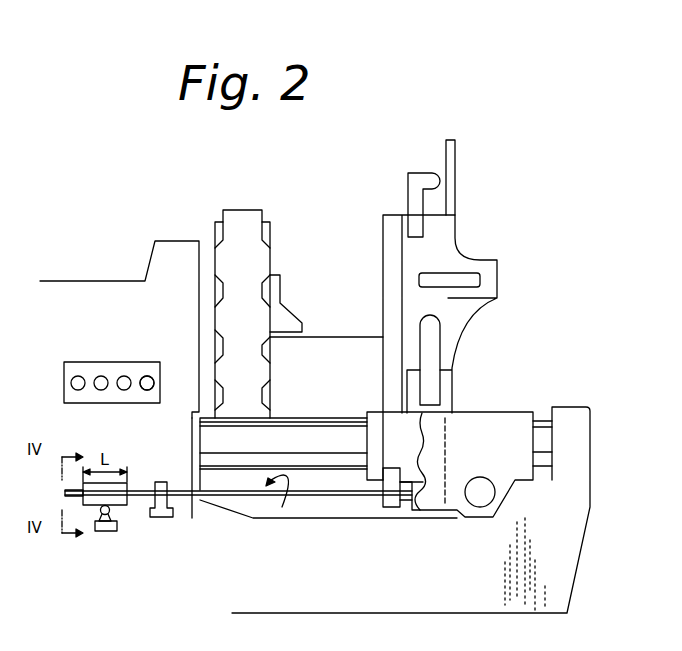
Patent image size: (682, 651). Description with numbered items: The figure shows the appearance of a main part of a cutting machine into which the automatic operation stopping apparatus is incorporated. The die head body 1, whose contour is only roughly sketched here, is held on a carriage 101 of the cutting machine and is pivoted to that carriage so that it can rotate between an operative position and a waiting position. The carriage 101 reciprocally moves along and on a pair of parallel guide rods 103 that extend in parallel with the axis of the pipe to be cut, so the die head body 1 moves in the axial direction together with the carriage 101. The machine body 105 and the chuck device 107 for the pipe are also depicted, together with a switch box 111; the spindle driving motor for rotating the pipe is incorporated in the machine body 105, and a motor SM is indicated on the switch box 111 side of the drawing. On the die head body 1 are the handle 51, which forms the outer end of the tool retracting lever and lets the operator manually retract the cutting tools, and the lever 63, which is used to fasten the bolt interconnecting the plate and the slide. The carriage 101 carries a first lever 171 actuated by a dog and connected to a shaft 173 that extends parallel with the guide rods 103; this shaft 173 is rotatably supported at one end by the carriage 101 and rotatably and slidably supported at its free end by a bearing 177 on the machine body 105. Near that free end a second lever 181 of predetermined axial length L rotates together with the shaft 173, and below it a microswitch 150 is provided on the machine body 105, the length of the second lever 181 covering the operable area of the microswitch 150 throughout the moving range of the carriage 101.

The die head body 1 is at (475, 258).
The handle 51 is at (452, 148).
The lever 63 is at (430, 178).
The carriage 101 is at (514, 421).
The guide rods 103 is at (327, 462).
The machine body 105 is at (120, 285).
The chuck device 107 is at (248, 212).
The switch box 111 is at (50, 284).
The microswitch 150 is at (104, 532).
The first lever 171 is at (394, 508).
The shaft 173 is at (181, 498).
The bearing 177 is at (157, 520).
The second lever 181 is at (118, 487).
The stepping motor SM is at (148, 380).